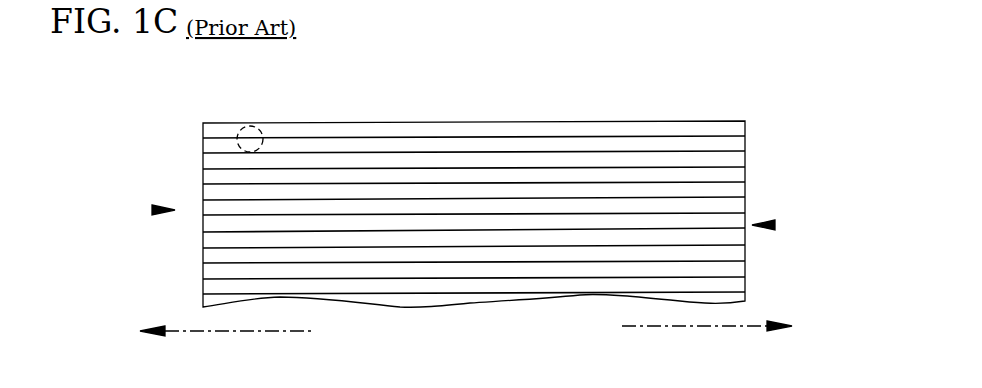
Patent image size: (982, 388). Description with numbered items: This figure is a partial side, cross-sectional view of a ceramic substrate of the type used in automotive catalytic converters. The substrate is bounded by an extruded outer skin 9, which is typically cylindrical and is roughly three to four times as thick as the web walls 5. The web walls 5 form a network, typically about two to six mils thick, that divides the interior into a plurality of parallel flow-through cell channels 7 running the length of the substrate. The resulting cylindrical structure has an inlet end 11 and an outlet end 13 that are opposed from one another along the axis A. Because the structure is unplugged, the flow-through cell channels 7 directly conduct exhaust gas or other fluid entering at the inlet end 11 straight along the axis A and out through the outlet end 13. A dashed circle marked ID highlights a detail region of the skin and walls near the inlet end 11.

The extruded outer skin 9 is at (339, 122).
The web walls 5 is at (474, 152).
The flow-through cell channels 7 is at (215, 238).
The inlet end 11 is at (152, 210).
The outlet end 13 is at (775, 225).
The identification mark ID is at (237, 131).
The axis A is at (725, 327).